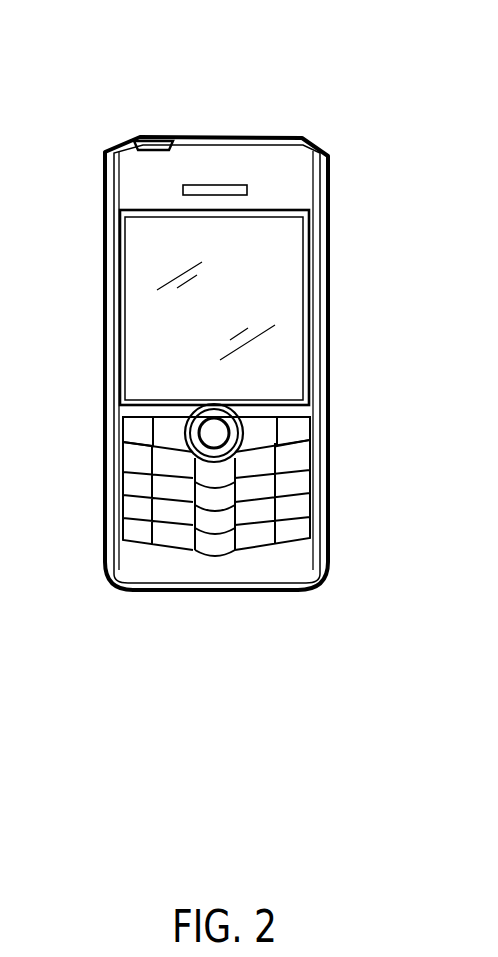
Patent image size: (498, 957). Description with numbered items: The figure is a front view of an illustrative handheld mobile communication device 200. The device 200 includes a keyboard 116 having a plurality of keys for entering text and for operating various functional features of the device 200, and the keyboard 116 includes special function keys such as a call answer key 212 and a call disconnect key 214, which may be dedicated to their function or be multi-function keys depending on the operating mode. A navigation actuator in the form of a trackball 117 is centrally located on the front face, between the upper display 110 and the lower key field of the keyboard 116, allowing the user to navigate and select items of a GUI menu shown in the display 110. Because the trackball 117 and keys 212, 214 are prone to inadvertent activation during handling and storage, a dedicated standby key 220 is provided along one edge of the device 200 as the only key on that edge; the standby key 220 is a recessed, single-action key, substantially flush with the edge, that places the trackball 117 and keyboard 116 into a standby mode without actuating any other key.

The handheld mobile communication device 200 is at (273, 736).
The standby key 220 is at (157, 137).
The display 110 is at (273, 287).
The keyboard 116 is at (228, 566).
The trackball 117 is at (217, 430).
The call answer key 212 is at (130, 432).
The call disconnect key 214 is at (292, 435).